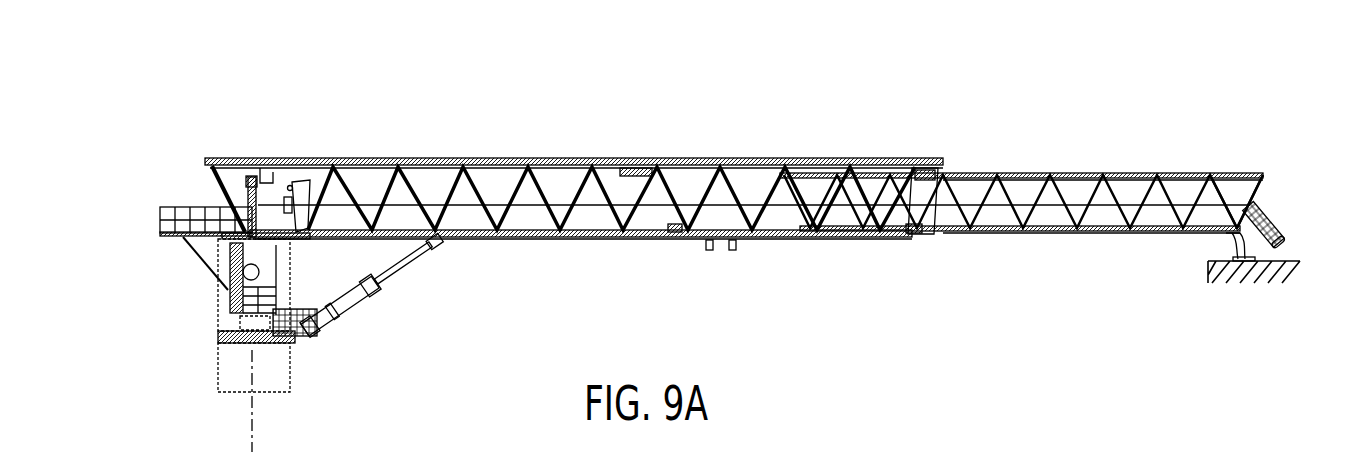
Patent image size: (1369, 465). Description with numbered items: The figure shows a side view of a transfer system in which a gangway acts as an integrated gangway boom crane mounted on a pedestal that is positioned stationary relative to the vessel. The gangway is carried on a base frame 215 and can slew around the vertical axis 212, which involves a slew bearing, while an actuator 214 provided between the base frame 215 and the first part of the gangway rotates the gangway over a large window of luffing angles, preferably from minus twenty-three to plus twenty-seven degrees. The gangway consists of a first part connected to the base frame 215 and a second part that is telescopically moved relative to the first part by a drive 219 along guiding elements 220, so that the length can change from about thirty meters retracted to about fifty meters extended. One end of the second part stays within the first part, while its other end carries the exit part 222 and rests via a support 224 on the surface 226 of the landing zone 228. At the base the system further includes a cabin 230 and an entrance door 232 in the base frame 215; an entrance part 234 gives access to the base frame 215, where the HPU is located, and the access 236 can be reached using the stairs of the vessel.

The axis 212 is at (255, 414).
The actuator 214 is at (368, 280).
The base frame 215 is at (336, 338).
The drive 219 is at (723, 262).
The guiding elements 220 is at (647, 150).
The exit part 222 is at (1274, 195).
The support 224 is at (1225, 247).
The surface 226 is at (1280, 255).
The landing zone 228 is at (1292, 244).
The cabin 230 is at (283, 195).
The entrance door 232 is at (255, 281).
The entrance part 234 is at (200, 289).
The access 236 is at (171, 165).